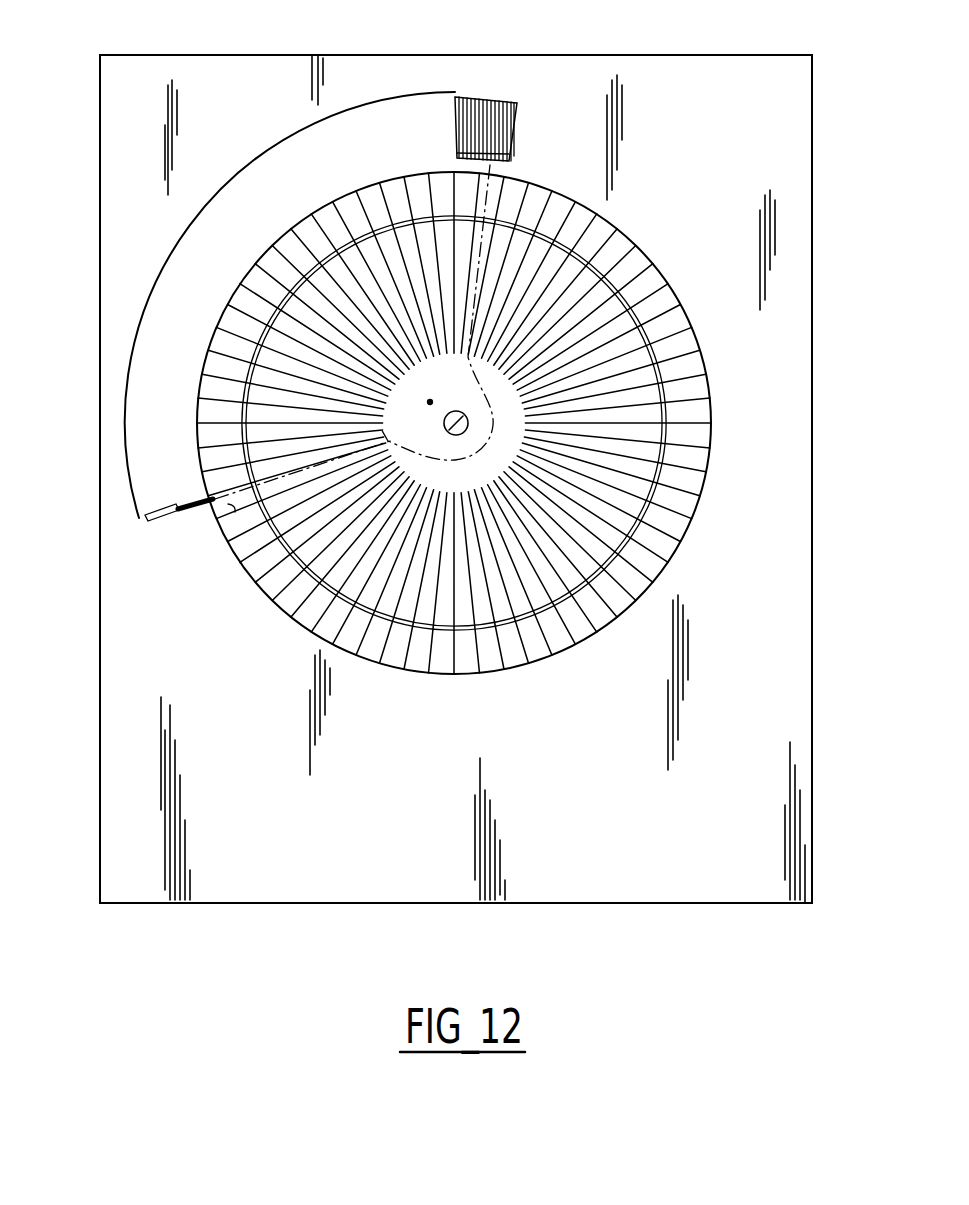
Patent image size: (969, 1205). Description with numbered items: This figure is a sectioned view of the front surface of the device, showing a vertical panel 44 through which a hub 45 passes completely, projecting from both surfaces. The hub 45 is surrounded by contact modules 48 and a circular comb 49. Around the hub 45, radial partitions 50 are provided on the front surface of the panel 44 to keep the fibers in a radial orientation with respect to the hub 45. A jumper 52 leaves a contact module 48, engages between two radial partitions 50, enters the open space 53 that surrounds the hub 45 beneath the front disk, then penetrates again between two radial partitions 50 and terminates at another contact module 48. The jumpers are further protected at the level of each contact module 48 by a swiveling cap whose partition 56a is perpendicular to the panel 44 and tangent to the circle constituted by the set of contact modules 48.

The vertical panel 44 is at (145, 690).
The hub 45 is at (463, 430).
The contact module 48 is at (518, 118).
The circular comb 49 is at (517, 155).
The radial partition 50 is at (230, 505).
The jumper 52 is at (200, 496).
The open space 53 is at (429, 386).
The partition 56a is at (127, 380).